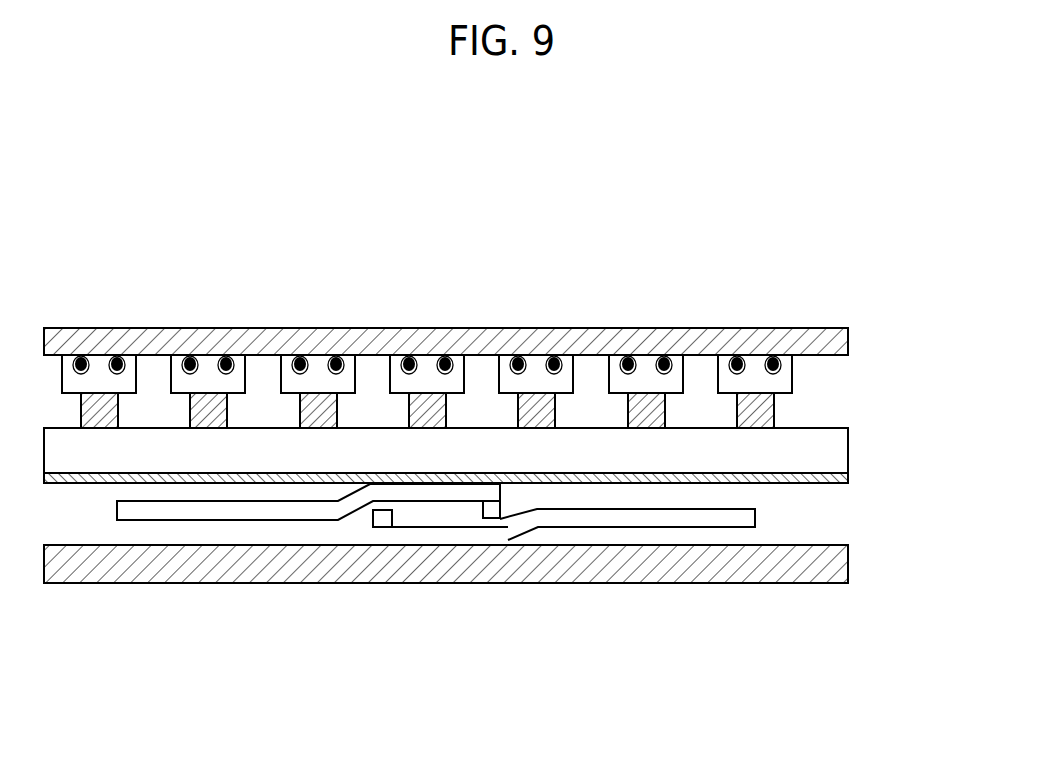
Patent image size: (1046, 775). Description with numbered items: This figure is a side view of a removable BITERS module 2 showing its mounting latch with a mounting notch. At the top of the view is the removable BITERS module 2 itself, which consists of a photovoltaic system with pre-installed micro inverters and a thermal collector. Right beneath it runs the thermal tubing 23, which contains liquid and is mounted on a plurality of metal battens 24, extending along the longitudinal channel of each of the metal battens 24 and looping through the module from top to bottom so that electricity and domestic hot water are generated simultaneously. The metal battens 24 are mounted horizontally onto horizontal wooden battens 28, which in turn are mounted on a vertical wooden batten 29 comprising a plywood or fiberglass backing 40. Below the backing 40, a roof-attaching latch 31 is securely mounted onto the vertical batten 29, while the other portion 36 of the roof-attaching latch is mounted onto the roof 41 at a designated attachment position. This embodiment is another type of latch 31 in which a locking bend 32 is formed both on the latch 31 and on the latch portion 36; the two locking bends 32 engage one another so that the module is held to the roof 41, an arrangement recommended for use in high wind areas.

The removable BITERS module 2 is at (810, 328).
The thermal tubing 23 is at (793, 365).
The metal battens 24 is at (782, 384).
The horizontal wooden battens 28 is at (775, 409).
The vertical wooden batten 29 is at (828, 452).
The plywood or fiberglass backing 40 is at (835, 480).
The roof-attaching latch 31 is at (167, 513).
The locking bend 32 is at (378, 515).
The other portion of the roof-attaching latch 36 is at (548, 517).
The roof 41 is at (803, 572).